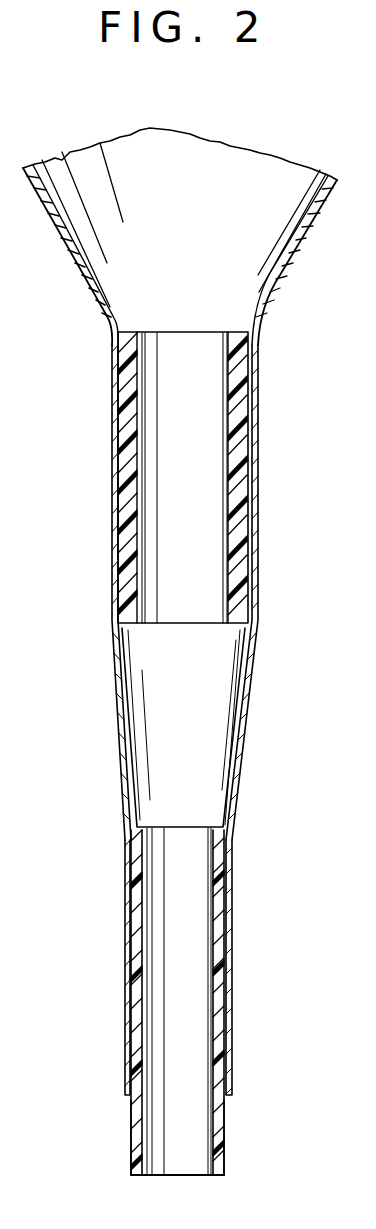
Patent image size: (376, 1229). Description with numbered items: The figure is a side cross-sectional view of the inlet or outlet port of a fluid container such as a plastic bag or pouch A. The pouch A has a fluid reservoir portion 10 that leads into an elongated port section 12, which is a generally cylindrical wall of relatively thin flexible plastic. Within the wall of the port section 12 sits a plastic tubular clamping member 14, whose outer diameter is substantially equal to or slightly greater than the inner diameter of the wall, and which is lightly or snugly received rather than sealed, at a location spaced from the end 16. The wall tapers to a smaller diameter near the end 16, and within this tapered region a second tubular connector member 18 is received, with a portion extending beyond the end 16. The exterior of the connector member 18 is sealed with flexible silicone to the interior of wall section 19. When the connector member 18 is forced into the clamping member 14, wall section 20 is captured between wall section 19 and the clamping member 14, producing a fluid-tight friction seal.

The fluid reservoir portion 10 is at (312, 227).
The pouch A is at (82, 275).
The port section 12 is at (117, 402).
The tubular clamping member 14 is at (237, 478).
The wall section 20 is at (254, 737).
The wall section 19 is at (232, 1035).
The end 16 is at (235, 1097).
The tubular connector member 18 is at (215, 1131).